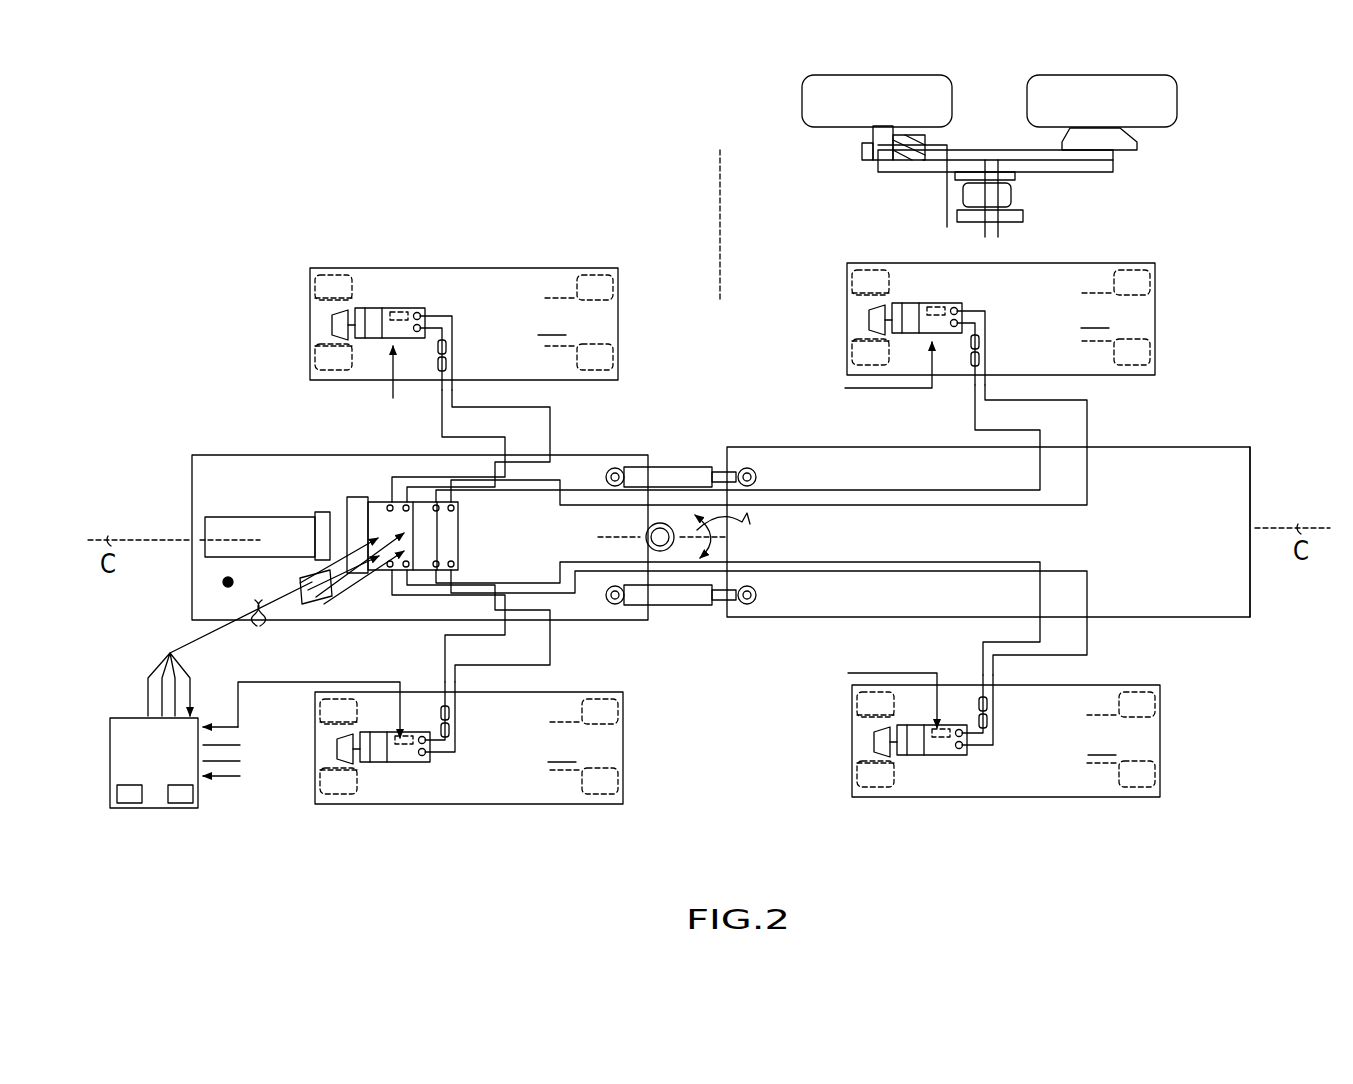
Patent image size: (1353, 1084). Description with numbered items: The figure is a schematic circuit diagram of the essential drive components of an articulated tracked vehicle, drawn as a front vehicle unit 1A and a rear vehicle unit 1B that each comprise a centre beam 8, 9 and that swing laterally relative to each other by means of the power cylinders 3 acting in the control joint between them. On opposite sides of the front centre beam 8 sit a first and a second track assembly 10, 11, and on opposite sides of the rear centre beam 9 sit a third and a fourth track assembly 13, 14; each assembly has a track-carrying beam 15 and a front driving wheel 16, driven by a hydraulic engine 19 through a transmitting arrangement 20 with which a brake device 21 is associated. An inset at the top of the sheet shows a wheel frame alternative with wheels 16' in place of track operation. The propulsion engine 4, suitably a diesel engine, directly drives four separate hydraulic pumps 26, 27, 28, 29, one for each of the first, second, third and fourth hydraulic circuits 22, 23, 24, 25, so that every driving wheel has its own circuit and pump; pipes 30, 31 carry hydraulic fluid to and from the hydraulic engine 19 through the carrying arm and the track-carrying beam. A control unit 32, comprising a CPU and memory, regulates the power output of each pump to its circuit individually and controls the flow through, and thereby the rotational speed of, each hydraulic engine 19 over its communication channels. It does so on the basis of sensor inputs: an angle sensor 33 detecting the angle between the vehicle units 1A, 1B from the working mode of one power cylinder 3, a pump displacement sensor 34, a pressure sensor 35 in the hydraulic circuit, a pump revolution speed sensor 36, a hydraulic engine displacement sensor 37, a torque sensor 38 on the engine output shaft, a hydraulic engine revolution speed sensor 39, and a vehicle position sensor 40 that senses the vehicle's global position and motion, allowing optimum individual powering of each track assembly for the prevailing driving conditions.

The front vehicle unit 1A is at (222, 447).
The rear vehicle unit 1B is at (1255, 432).
The power cylinders 3 is at (672, 470).
The propulsion engine 4 is at (255, 533).
The centre beam 8 is at (192, 597).
The centre beam 9 is at (1250, 507).
The first track assembly 10 is at (600, 805).
The second track assembly 11 is at (575, 265).
The third track assembly 13 is at (1047, 798).
The fourth track assembly 14 is at (1060, 262).
The track-carrying beam 15 is at (826, 530).
The front driving wheel 16 is at (590, 535).
The wheels 16' is at (974, 120).
The hydraulic engine 19 is at (868, 155).
The transmitting arrangement 20 is at (885, 130).
The brake device 21 is at (870, 140).
The first hydraulic circuit 22 is at (602, 661).
The second hydraulic circuit 23 is at (595, 425).
The third hydraulic circuit 24 is at (1120, 652).
The fourth hydraulic circuit 25 is at (1117, 418).
The hydraulic pump 26 is at (388, 567).
The hydraulic pump 27 is at (387, 523).
The hydraulic pump 28 is at (425, 565).
The hydraulic pump 29 is at (427, 518).
The pipe 30 is at (447, 758).
The pipe 31 is at (453, 757).
The control unit 32 is at (112, 750).
The angle sensor 33 is at (664, 542).
The pump displacement sensor 34 is at (393, 570).
The pressure sensor 35 is at (455, 716).
The pump revolution speed sensor 36 is at (130, 803).
The hydraulic engine displacement sensor 37 is at (452, 736).
The torque sensor 38 is at (180, 803).
The hydraulic engine revolution speed sensor 39 is at (407, 765).
The vehicle position sensor 40 is at (223, 582).